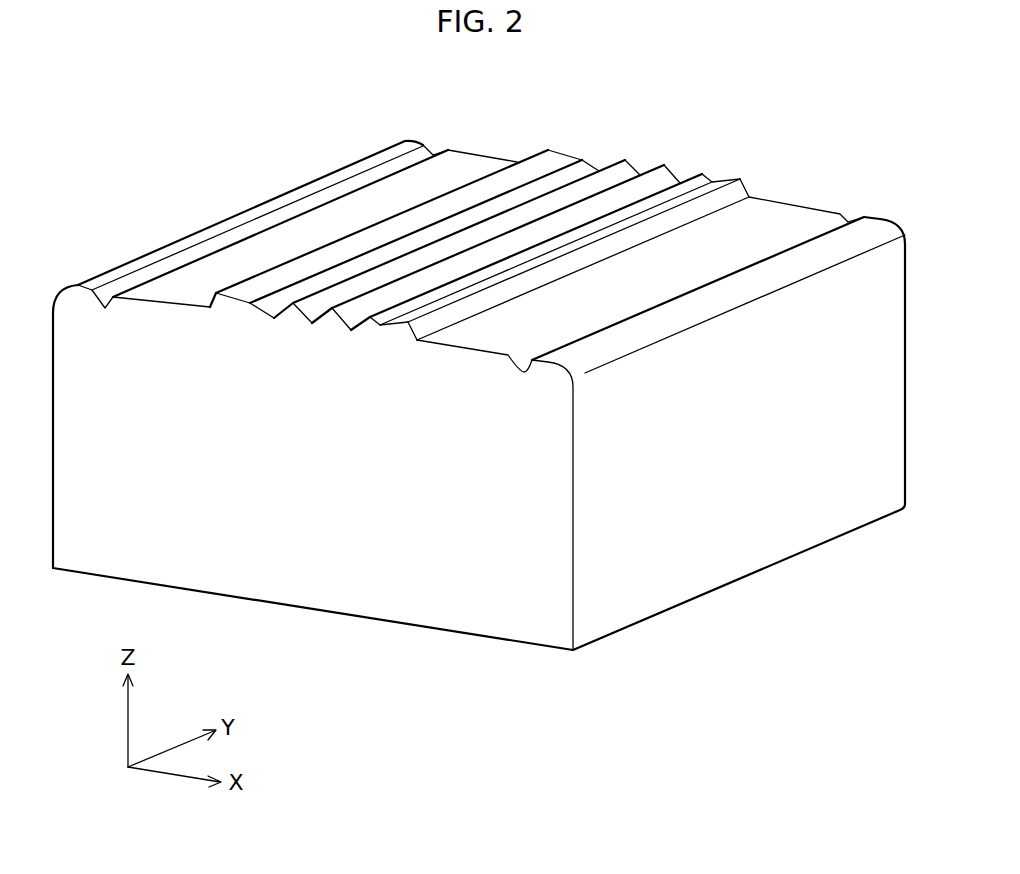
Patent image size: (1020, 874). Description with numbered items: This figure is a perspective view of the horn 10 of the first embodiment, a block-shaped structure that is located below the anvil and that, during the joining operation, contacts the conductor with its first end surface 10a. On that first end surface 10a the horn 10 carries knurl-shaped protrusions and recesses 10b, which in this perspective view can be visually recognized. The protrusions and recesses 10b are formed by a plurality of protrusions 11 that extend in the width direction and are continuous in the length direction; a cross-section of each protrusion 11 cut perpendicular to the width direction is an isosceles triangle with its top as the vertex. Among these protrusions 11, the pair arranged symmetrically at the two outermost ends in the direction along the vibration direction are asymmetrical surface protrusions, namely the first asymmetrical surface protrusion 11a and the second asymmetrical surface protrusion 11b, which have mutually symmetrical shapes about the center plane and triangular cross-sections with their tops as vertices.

The horn 10 is at (760, 508).
The first end surface 10a is at (193, 275).
The protrusions and recesses 10b is at (503, 211).
The protrusion 11 is at (600, 160).
The first asymmetrical surface protrusion 11a is at (600, 145).
The second asymmetrical surface protrusion 11b is at (583, 96).